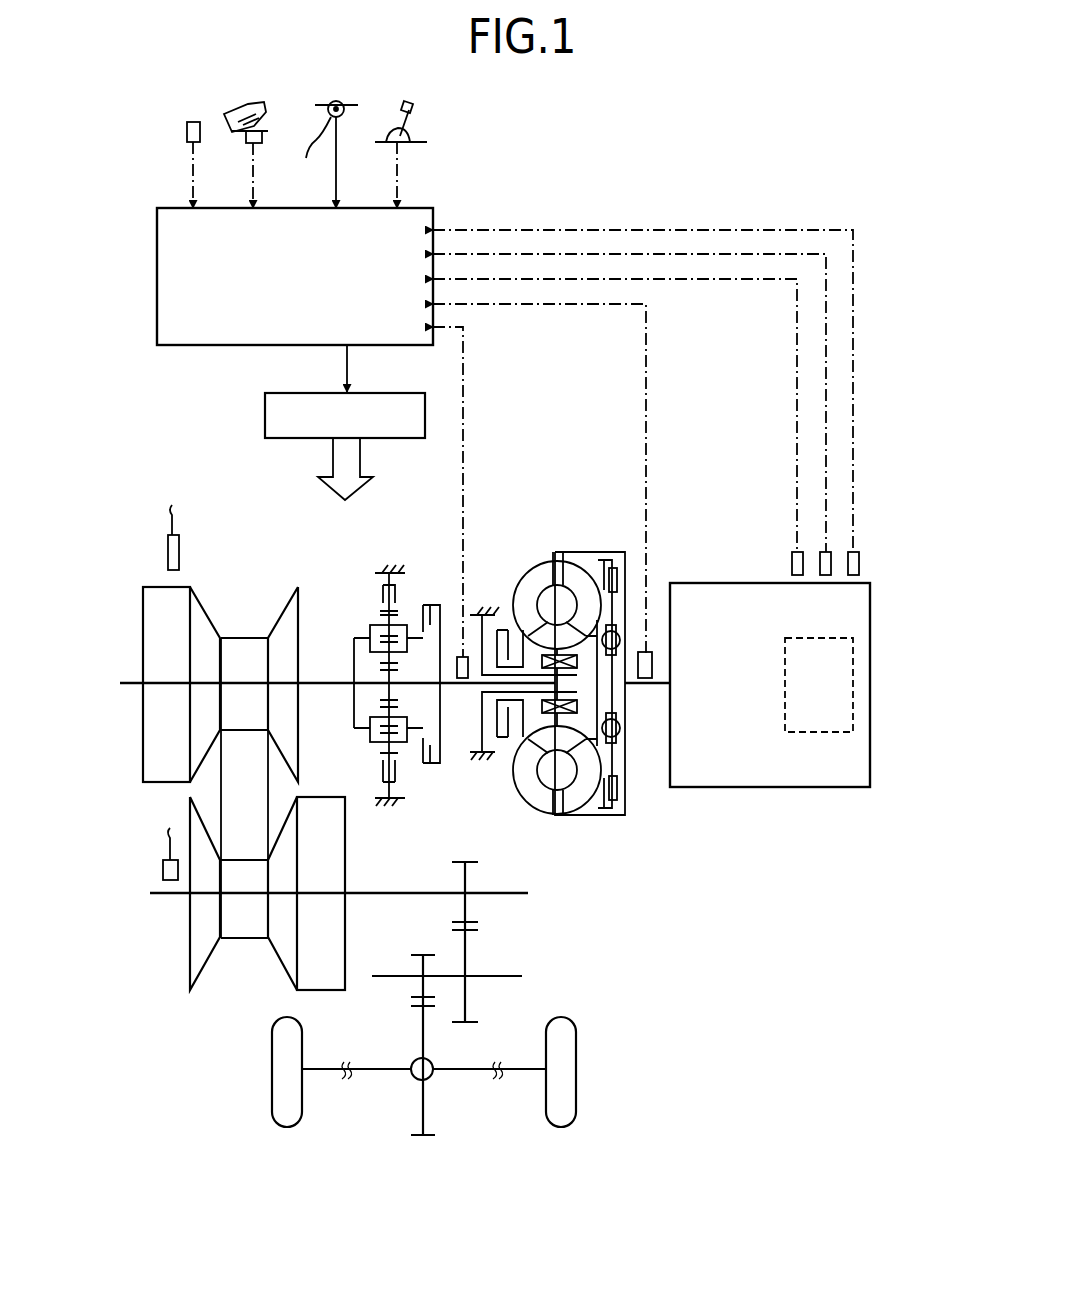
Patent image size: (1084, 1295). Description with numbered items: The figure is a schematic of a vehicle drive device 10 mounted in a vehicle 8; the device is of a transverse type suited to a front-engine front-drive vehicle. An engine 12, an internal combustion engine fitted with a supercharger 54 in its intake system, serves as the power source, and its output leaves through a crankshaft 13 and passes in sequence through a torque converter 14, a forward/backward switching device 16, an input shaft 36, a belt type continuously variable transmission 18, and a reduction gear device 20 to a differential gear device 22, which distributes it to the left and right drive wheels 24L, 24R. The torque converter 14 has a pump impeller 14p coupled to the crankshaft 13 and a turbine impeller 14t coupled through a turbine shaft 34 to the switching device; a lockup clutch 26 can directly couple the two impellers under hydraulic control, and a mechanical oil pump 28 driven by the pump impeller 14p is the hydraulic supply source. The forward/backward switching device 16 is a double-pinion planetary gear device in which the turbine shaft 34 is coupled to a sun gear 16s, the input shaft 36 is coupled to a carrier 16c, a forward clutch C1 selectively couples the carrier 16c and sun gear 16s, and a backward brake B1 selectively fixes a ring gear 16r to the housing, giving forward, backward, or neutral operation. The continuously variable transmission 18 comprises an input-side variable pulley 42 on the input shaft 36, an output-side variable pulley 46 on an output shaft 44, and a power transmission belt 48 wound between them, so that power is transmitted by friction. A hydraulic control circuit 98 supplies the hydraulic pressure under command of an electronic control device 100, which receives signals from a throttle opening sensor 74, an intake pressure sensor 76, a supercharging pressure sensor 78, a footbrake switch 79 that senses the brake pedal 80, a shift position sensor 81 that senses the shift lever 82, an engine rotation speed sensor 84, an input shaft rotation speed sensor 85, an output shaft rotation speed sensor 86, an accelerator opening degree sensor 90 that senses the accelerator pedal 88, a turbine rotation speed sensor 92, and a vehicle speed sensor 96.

The vehicle 8 is at (865, 172).
The vehicle drive device 10 is at (668, 492).
The engine 12 is at (866, 618).
The crankshaft 13 is at (643, 688).
The torque converter 14 is at (553, 535).
The pump impeller 14p is at (532, 788).
The turbine impeller 14t is at (575, 792).
The forward/backward switching device 16 is at (360, 560).
The carrier 16c is at (369, 633).
The sun gear 16s is at (382, 692).
The ring gear 16r is at (382, 758).
The belt type continuously variable transmission 18 is at (218, 1005).
The reduction gear device 20 is at (525, 942).
The differential gear device 22 is at (414, 1076).
The left drive wheel 24L is at (276, 1096).
The right drive wheel 24R is at (566, 1085).
The lockup clutch 26 is at (612, 578).
The mechanical oil pump 28 is at (503, 628).
The turbine shaft 34 is at (450, 690).
The input shaft 36 is at (330, 682).
The input-side variable pulley 42 is at (152, 608).
The output shaft 44 is at (402, 900).
The output-side variable pulley 46 is at (338, 876).
The power transmission belt 48 is at (245, 634).
The supercharger 54 is at (838, 656).
The throttle opening sensor 74 is at (859, 560).
The intake pressure sensor 76 is at (820, 558).
The supercharging pressure sensor 78 is at (792, 558).
The footbrake switch 79 is at (340, 108).
The brake pedal 80 is at (311, 149).
The shift position sensor 81 is at (427, 142).
The shift lever 82 is at (398, 128).
The engine rotation speed sensor 84 is at (650, 655).
The input shaft rotation speed sensor 85 is at (180, 540).
The output shaft rotation speed sensor 86 is at (162, 875).
The accelerator pedal 88 is at (266, 112).
The accelerator opening degree sensor 90 is at (262, 137).
The turbine rotation speed sensor 92 is at (462, 655).
The vehicle speed sensor 96 is at (187, 120).
The hydraulic control circuit 98 is at (278, 398).
The electronic control device 100 is at (425, 214).
The backward brake B1 is at (375, 597).
The forward clutch C1 is at (424, 674).